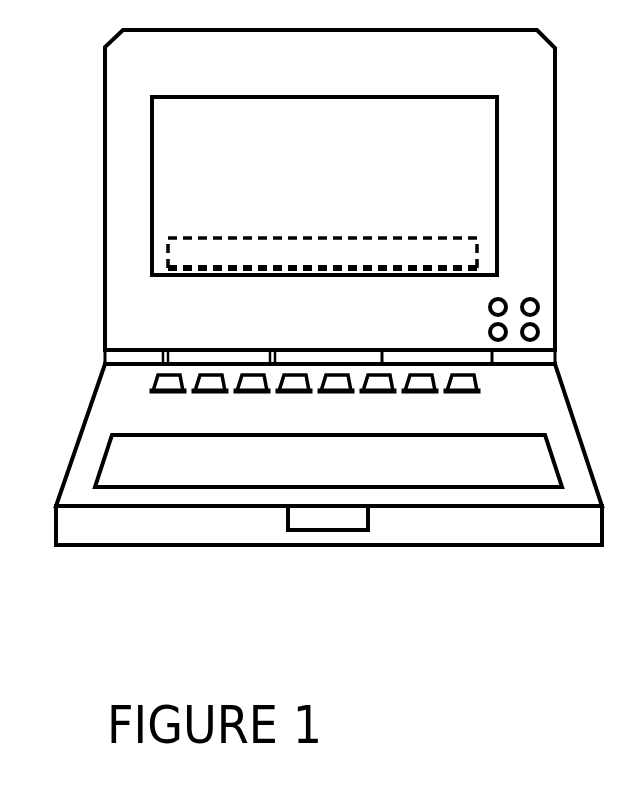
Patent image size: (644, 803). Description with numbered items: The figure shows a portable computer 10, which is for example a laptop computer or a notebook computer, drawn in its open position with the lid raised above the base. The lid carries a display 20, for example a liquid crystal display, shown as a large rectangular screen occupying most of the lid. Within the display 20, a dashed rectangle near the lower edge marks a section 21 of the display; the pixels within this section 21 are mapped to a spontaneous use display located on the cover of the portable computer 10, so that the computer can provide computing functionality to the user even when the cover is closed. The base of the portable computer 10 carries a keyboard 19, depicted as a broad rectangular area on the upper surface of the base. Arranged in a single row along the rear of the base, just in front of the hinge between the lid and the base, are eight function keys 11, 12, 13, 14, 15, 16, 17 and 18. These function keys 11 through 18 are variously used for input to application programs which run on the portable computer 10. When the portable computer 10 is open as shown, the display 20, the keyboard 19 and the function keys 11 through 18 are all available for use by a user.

The portable computer 10 is at (165, 547).
The function key 11 is at (160, 394).
The function key 12 is at (202, 394).
The function key 13 is at (244, 394).
The function key 14 is at (286, 394).
The function key 15 is at (328, 394).
The function key 16 is at (370, 394).
The function key 17 is at (412, 394).
The function key 18 is at (454, 394).
The keyboard 19 is at (528, 434).
The display 20 is at (153, 278).
The section of display 21 is at (316, 236).